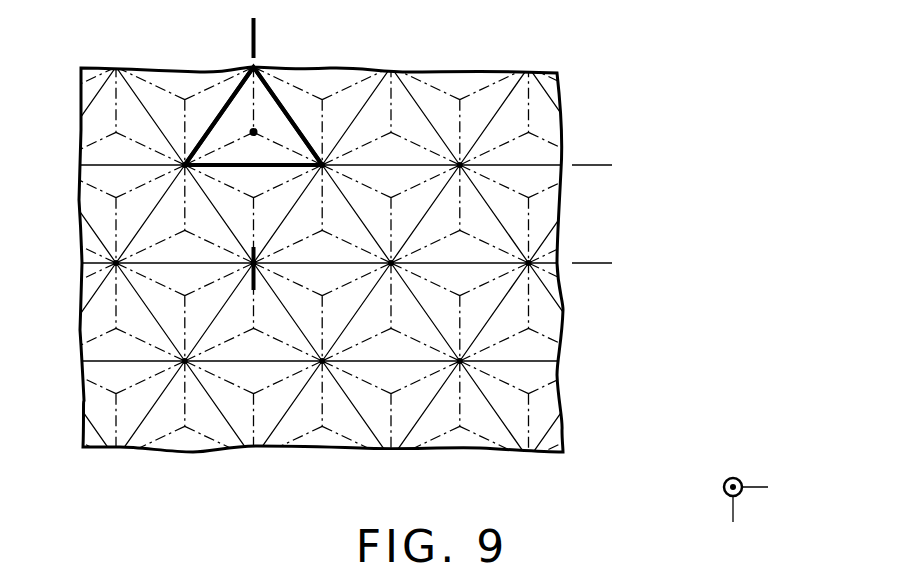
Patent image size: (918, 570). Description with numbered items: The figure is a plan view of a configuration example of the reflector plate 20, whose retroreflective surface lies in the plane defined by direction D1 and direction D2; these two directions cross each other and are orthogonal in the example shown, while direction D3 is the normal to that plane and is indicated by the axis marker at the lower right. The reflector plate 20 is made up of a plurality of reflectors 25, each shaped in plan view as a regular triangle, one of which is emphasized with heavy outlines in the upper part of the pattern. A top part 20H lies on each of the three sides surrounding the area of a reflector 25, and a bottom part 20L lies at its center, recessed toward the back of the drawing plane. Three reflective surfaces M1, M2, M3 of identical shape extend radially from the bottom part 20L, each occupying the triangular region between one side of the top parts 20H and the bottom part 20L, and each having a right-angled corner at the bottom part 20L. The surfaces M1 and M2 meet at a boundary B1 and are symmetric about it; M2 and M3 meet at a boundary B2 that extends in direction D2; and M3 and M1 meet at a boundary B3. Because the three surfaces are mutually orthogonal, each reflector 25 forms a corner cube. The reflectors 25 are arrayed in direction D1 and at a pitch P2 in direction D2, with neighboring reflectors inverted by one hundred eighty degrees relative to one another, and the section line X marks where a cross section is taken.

The reflector plate 20 is at (567, 52).
The reflector 25 is at (225, 175).
The top part 20H is at (263, 116).
The bottom part 20L is at (242, 126).
The boundary B1 is at (324, 98).
The boundary B2 is at (280, 135).
The boundary B3 is at (185, 164).
The reflective surface M1 is at (258, 143).
The reflective surface M2 is at (295, 137).
The reflective surface M3 is at (211, 143).
The pitch P2 is at (594, 176).
The section line X-X' X is at (257, 160).
The direction D1 is at (723, 487).
The direction D2 is at (733, 477).
The direction D3 is at (755, 491).